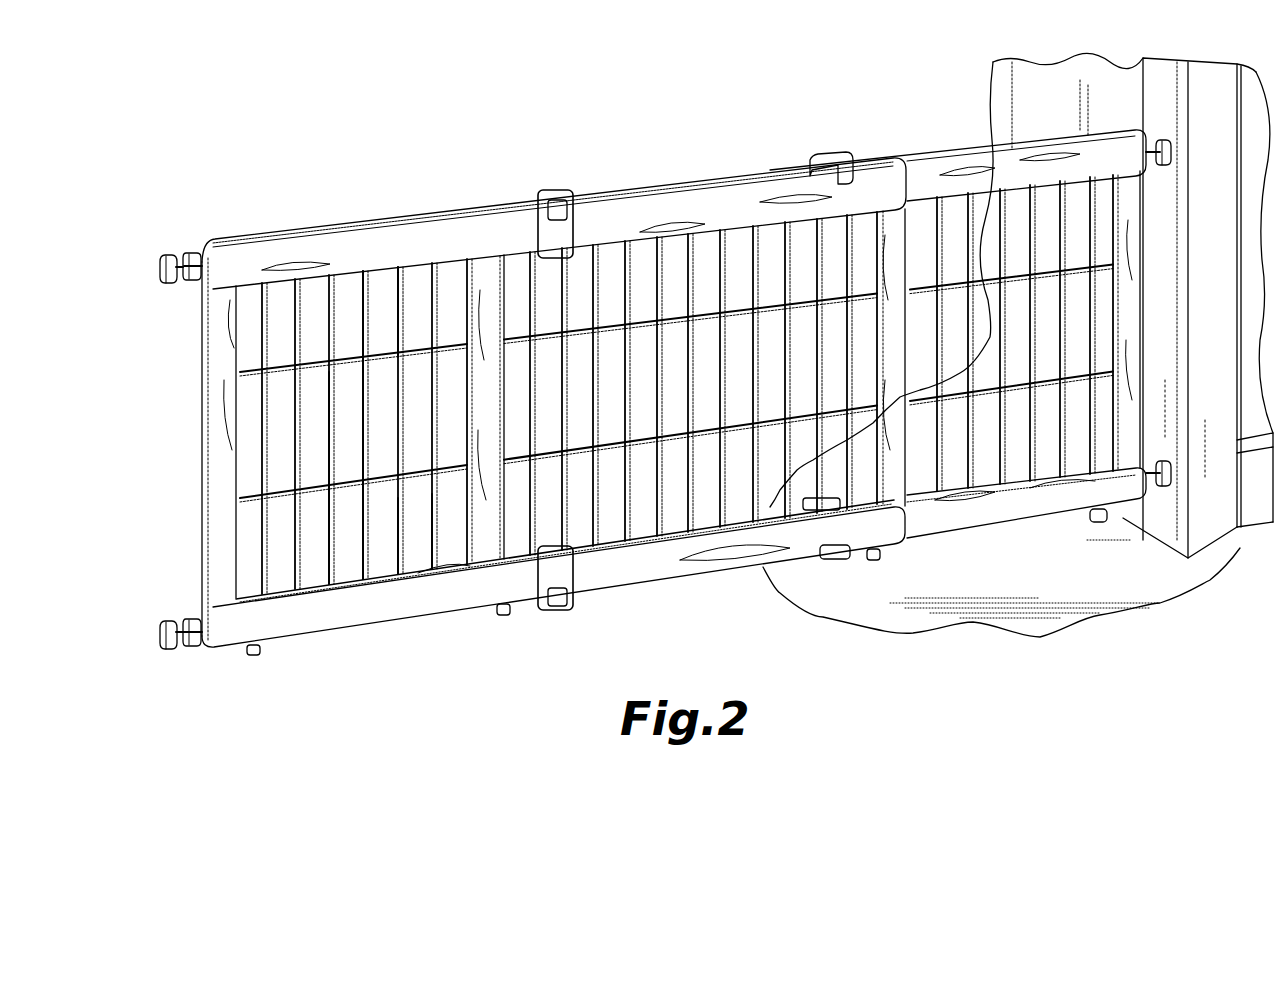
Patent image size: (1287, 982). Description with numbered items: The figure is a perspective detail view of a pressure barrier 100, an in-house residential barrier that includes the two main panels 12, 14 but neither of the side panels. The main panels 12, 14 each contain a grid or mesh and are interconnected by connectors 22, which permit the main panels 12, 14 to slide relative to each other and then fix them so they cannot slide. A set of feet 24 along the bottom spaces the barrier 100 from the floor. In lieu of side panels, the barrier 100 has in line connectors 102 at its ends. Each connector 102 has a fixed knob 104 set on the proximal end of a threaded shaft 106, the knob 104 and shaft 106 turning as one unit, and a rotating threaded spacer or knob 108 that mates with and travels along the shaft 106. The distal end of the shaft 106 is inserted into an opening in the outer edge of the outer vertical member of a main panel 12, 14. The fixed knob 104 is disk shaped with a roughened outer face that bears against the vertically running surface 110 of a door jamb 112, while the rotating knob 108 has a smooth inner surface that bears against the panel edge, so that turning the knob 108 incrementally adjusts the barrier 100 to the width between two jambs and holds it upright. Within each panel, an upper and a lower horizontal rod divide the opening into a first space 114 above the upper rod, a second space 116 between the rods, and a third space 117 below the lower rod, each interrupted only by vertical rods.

The pressure barrier 100 is at (684, 166).
The main panel 12 is at (333, 226).
The main panel 14 is at (928, 153).
The connector 22 is at (832, 160).
The foot 24 is at (262, 651).
The in line connector 102 is at (186, 640).
The fixed knob 104 is at (168, 252).
The threaded shaft 106 is at (200, 256).
The rotating threaded spacer or knob 108 is at (1158, 138).
The vertically running surface 110 is at (1162, 522).
The door jamb 112 is at (1207, 550).
The first space 114 is at (388, 291).
The second space 116 is at (345, 453).
The third space 117 is at (416, 548).